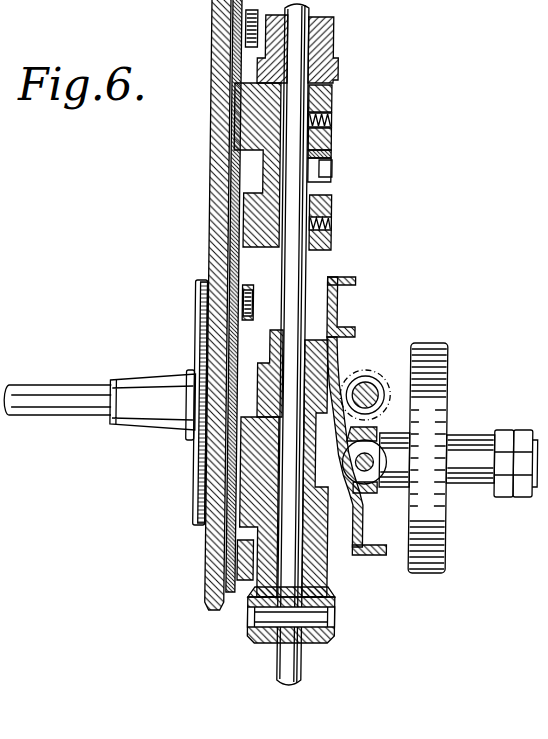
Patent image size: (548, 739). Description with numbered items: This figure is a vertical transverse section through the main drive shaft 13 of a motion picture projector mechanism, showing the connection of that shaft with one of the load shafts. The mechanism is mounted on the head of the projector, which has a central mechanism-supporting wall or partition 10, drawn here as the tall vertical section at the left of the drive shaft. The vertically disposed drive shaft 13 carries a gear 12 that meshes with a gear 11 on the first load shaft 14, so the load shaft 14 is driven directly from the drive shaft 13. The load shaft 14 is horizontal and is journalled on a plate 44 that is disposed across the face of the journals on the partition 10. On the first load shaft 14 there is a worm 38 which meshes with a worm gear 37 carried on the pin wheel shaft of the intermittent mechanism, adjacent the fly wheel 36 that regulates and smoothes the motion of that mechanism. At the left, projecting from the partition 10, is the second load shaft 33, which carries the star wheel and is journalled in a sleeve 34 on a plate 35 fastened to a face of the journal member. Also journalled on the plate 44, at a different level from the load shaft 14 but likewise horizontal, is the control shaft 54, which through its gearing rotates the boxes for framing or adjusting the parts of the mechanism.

The mechanism-supporting wall or partition 10 is at (211, 190).
The gear 11 is at (361, 347).
The gear 12 is at (271, 380).
The main drive shaft 13 is at (313, 268).
The load shaft 14 is at (375, 383).
The shaft 33 is at (72, 392).
The sleeve 34 is at (150, 427).
The plate 35 is at (202, 477).
The fly wheel 36 is at (454, 525).
The worm gear 37 is at (369, 490).
The worm 38 is at (415, 390).
The plate 44 is at (344, 282).
The control shaft 54 is at (377, 458).